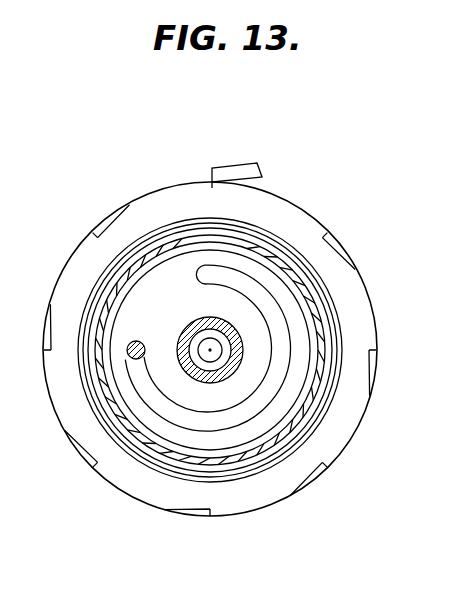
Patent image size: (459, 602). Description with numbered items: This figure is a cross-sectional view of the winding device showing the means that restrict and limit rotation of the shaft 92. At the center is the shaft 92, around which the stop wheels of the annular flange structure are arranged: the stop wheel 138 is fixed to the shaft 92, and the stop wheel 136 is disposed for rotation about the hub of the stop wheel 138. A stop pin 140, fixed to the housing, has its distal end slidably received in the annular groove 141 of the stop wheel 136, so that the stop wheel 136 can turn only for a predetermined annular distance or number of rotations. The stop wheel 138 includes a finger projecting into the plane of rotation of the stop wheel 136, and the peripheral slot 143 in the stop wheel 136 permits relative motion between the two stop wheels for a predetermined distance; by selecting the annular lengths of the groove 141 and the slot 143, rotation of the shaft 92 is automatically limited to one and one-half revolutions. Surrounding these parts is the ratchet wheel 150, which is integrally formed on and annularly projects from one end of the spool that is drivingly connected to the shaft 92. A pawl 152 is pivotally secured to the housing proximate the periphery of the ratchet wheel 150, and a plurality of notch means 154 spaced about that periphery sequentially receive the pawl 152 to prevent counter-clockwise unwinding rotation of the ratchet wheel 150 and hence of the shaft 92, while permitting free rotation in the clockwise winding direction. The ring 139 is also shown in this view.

The shaft 92 is at (237, 355).
The stop wheel 136 is at (160, 287).
The stop wheel 138 is at (270, 252).
The inner ring 139 is at (257, 257).
The stop pin 140 is at (158, 341).
The annular groove 141 is at (245, 417).
The peripheral slot 143 is at (305, 398).
The ratchet wheel 150 is at (330, 467).
The pawl 152 is at (243, 168).
The notch means 154 is at (195, 517).